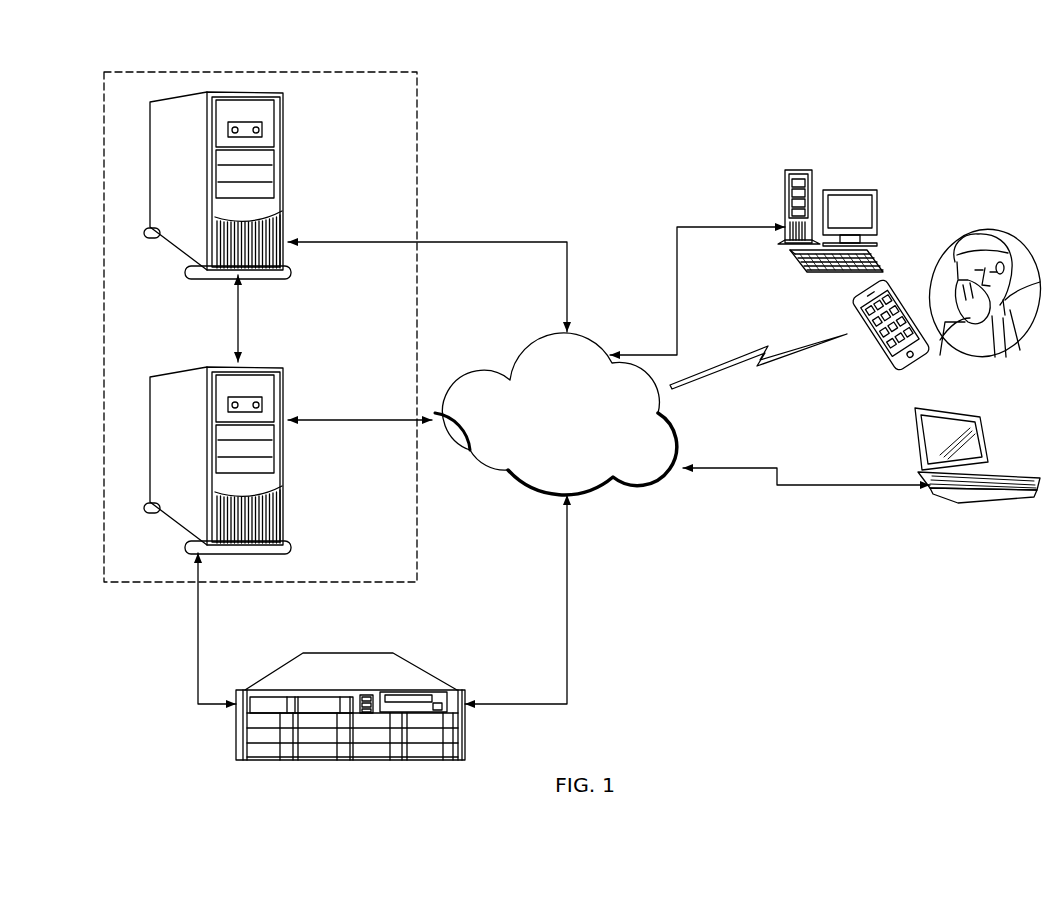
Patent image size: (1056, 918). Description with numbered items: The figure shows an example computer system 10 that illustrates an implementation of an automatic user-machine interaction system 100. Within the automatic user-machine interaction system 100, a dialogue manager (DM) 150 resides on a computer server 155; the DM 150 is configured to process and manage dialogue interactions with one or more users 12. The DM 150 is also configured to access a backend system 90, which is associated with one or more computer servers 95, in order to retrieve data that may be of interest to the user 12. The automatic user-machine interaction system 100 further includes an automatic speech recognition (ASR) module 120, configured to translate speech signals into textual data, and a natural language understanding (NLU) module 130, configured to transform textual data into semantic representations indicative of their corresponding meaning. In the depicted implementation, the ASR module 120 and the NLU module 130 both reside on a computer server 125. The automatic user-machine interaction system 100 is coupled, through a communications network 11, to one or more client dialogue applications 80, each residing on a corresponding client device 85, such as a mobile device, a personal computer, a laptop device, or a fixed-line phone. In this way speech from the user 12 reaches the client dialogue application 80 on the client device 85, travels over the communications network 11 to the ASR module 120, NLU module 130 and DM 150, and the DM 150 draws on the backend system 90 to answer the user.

The computer system 10 is at (717, 66).
The communications network 11 is at (568, 423).
The user 12 is at (978, 230).
The client dialogue application 80 is at (886, 331).
The client device 85 is at (785, 190).
The backend system 90 is at (375, 676).
The computer server 95 is at (490, 742).
The automatic user-machine interaction system 100 is at (401, 571).
The automatic speech recognition (ASR) module 120 is at (236, 181).
The computer server 125 is at (236, 181).
The natural language understanding (NLU) module 130 is at (162, 272).
The dialogue manager (DM) 150 is at (162, 548).
The computer server 155 is at (239, 439).